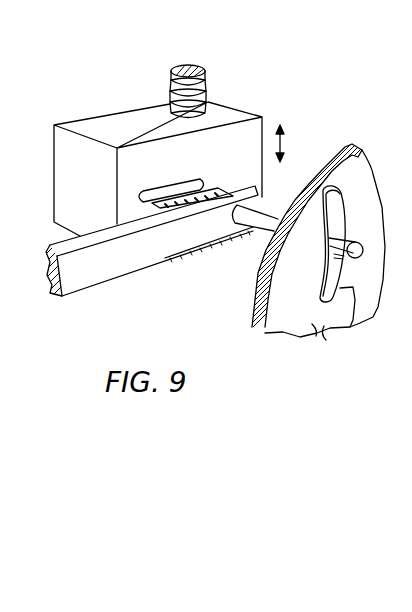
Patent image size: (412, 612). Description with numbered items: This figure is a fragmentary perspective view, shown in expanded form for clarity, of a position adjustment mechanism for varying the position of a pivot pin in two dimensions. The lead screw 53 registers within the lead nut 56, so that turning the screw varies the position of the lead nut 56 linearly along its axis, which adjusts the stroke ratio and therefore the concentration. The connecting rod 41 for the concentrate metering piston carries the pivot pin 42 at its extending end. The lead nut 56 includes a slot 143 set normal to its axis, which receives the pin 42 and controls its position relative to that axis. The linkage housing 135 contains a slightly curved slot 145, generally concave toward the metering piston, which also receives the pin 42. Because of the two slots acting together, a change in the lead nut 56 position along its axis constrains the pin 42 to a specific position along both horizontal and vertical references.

The connecting rod 41 is at (102, 268).
The pivot pin 42 is at (256, 232).
The lead screw 53 is at (208, 84).
The lead nut 56 is at (262, 117).
The linkage housing 135 is at (313, 323).
The slot 143 is at (197, 173).
The curved slot 145 is at (351, 325).